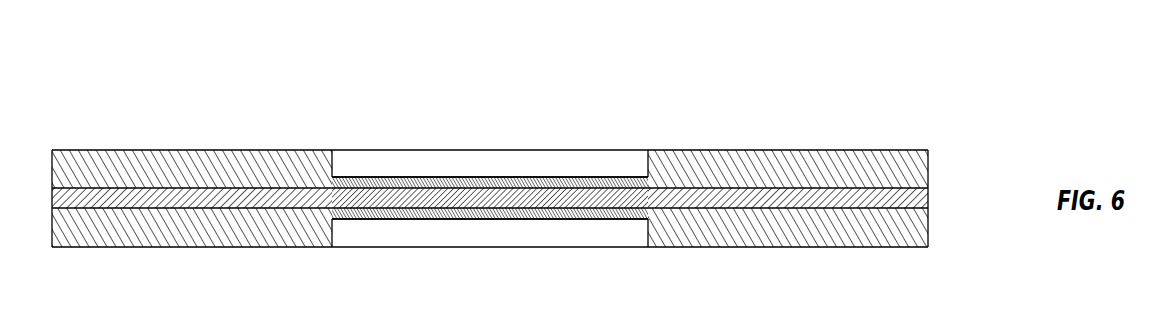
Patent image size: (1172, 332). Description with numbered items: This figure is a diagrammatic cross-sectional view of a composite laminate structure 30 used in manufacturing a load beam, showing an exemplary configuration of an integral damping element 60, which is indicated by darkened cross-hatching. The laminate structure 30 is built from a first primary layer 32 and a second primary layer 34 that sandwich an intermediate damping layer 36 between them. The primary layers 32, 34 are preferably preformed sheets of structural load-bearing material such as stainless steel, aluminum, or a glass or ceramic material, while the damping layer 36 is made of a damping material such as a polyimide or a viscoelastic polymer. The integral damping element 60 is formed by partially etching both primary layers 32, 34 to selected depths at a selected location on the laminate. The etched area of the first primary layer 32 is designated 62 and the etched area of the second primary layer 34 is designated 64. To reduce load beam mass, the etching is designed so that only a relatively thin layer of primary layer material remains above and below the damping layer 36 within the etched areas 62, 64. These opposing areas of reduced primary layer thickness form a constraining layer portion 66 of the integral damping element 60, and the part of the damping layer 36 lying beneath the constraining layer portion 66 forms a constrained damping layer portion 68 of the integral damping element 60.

The composite laminate structure 30 is at (219, 74).
The first primary layer 32 is at (930, 152).
The second primary layer 34 is at (930, 225).
The intermediate damping layer 36 is at (930, 199).
The integral damping element 60 is at (460, 226).
The etched area of first primary layer 62 is at (326, 162).
The etched area of second primary layer 64 is at (326, 238).
The constraining layer portion 66 is at (456, 219).
The constrained damping layer portion 68 is at (530, 177).